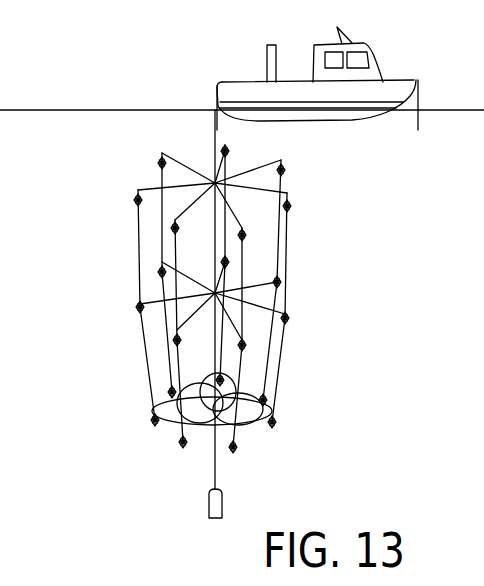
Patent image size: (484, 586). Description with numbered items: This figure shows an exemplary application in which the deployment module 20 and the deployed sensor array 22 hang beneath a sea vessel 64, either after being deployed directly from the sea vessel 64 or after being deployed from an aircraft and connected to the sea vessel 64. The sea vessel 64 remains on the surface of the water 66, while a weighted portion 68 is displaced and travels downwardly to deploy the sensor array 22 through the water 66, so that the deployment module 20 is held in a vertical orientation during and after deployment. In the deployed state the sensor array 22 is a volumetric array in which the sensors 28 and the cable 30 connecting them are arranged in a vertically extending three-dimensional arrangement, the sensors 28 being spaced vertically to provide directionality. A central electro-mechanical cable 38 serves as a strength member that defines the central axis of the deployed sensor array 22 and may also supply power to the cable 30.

The water 66 is at (74, 108).
The sea vessel 64 is at (232, 95).
The deployment module 20 is at (214, 299).
The sensor array 22 is at (114, 306).
The central electro-mechanical cable 38 is at (170, 320).
The sensors 28 is at (287, 320).
The cable 30 is at (276, 378).
The weighted portion 68 is at (212, 493).